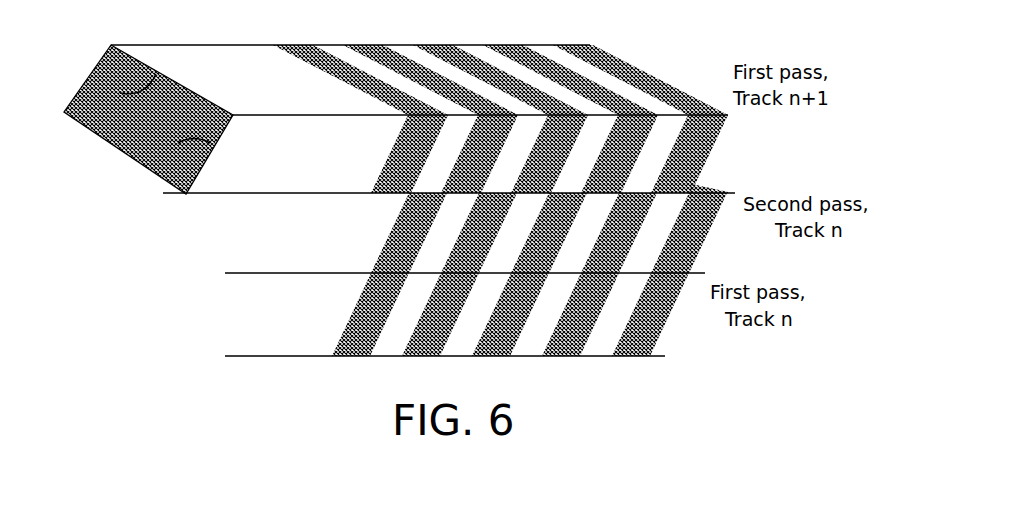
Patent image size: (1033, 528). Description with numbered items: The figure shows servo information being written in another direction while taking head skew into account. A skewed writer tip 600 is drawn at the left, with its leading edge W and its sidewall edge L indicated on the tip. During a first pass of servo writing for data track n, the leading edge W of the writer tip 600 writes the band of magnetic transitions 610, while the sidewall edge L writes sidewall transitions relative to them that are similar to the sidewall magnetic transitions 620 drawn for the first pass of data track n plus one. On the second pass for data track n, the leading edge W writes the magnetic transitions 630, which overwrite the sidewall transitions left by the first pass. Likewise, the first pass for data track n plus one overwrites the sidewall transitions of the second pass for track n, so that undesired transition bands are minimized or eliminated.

The writer tip 600 is at (118, 154).
The magnetic transitions 610 is at (295, 313).
The sidewall magnetic transitions 620 is at (644, 64).
The magnetic transitions 630 is at (336, 231).